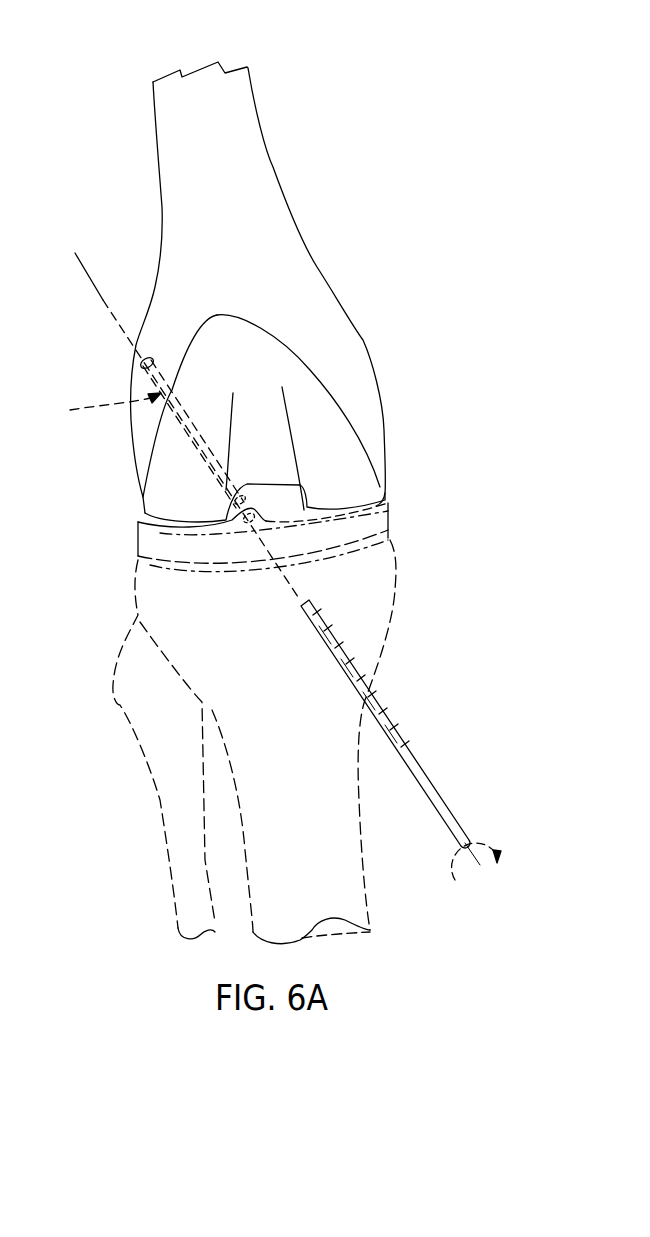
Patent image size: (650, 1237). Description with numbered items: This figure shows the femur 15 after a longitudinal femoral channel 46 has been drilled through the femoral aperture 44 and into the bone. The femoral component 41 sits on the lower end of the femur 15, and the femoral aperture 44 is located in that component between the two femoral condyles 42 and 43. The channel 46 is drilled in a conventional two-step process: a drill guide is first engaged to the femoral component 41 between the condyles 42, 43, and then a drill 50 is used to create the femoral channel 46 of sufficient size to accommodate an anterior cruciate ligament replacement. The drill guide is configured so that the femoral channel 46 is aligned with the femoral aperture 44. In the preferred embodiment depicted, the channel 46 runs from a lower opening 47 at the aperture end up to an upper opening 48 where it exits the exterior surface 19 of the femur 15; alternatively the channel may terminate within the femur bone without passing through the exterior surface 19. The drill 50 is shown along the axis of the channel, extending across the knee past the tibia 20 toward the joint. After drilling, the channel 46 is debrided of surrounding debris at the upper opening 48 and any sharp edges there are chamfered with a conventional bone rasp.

The femur 15 is at (258, 165).
The exterior surface 19 is at (152, 303).
The tibia 20 is at (345, 866).
The femoral component 41 is at (346, 412).
The femoral condyle 42 is at (352, 483).
The femoral condyle 43 is at (173, 500).
The femoral aperture 44 is at (183, 440).
The longitudinal channel 46 is at (99, 410).
The lower opening 47 is at (246, 523).
The upper opening 48 is at (138, 357).
The drill 50 is at (430, 777).